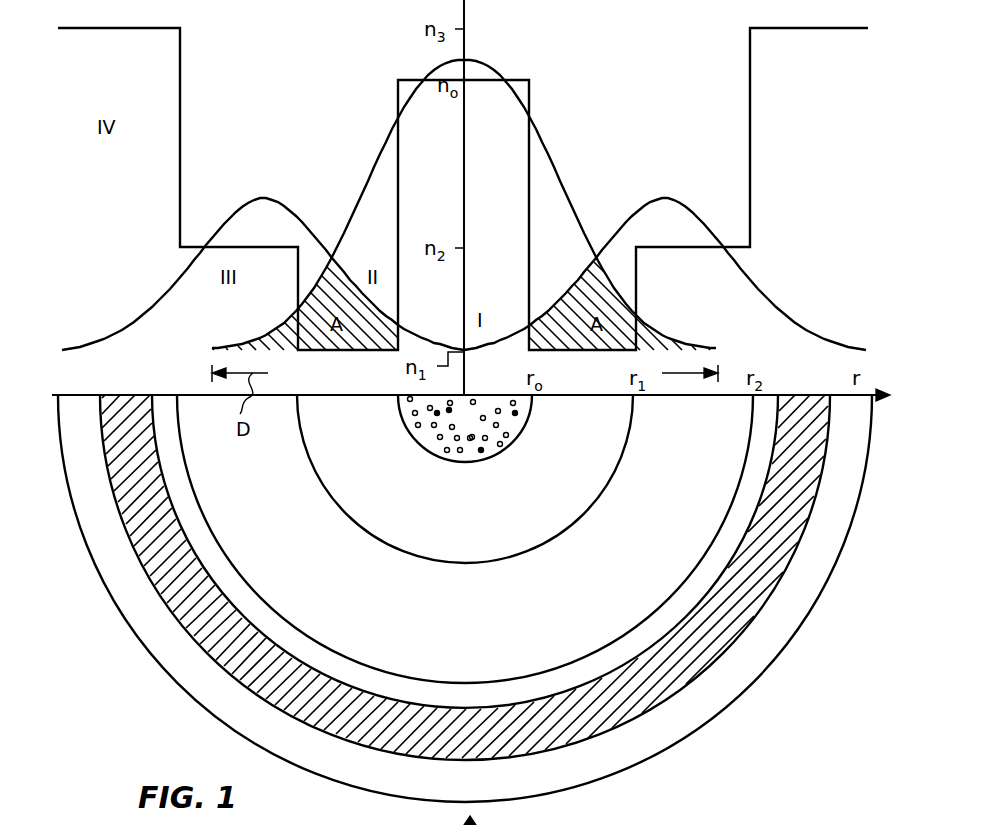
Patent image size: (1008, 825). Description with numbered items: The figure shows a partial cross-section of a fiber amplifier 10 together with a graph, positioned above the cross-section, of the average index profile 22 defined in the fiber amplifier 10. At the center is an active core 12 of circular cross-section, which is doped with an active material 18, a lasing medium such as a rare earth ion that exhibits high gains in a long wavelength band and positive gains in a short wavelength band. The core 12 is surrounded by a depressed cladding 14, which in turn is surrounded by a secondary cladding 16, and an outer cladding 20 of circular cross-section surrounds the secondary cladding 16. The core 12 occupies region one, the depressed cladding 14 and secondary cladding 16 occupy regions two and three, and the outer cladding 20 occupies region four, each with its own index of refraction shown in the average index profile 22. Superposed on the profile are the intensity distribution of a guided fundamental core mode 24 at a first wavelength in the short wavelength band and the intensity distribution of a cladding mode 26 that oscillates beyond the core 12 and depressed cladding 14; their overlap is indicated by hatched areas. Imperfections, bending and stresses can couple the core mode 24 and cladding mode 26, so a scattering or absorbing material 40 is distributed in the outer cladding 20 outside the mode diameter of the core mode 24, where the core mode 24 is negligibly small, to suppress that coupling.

The fiber amplifier 10 is at (136, 688).
The active core 12 is at (419, 449).
The depressed cladding 14 is at (585, 453).
The secondary cladding 16 is at (599, 599).
The active material 18 is at (484, 446).
The outer cladding 20 is at (716, 716).
The average index profile 22 is at (381, 213).
The guided fundamental core mode 24 is at (564, 181).
The cladding mode 26 is at (662, 198).
The material 40 is at (173, 553).